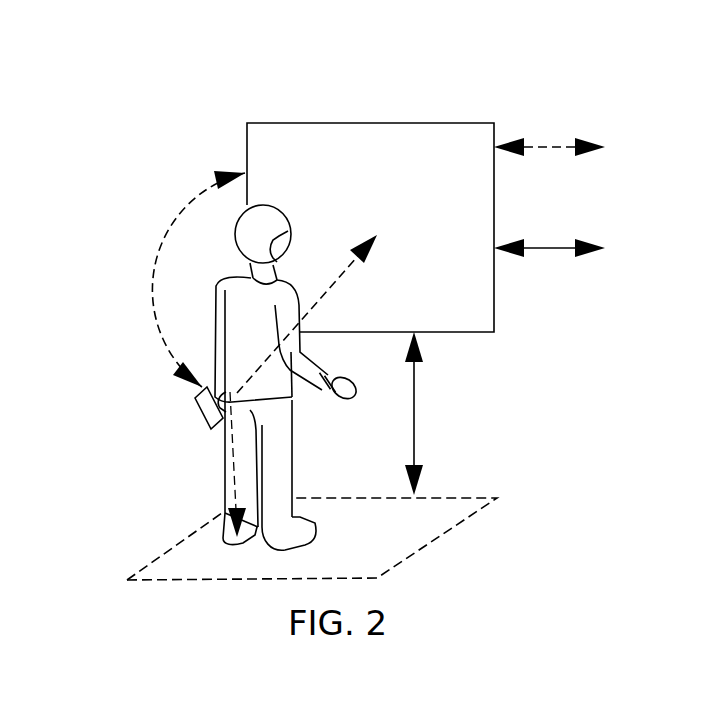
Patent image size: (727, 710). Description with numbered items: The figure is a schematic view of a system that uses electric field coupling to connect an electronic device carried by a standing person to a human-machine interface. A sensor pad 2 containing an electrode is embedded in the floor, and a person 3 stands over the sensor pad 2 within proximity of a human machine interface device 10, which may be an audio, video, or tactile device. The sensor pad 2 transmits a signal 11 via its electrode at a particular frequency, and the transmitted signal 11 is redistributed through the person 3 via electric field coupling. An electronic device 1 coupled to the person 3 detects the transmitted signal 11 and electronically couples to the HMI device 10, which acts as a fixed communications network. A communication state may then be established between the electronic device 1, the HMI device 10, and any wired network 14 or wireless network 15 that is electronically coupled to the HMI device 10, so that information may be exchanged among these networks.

The human machine interface device 10 is at (417, 123).
The person 3 is at (238, 318).
The electronic device 1 is at (210, 413).
The signal 11 is at (227, 482).
The sensor pad 2 is at (170, 557).
The wired network 14 is at (541, 250).
The wireless network 15 is at (538, 148).